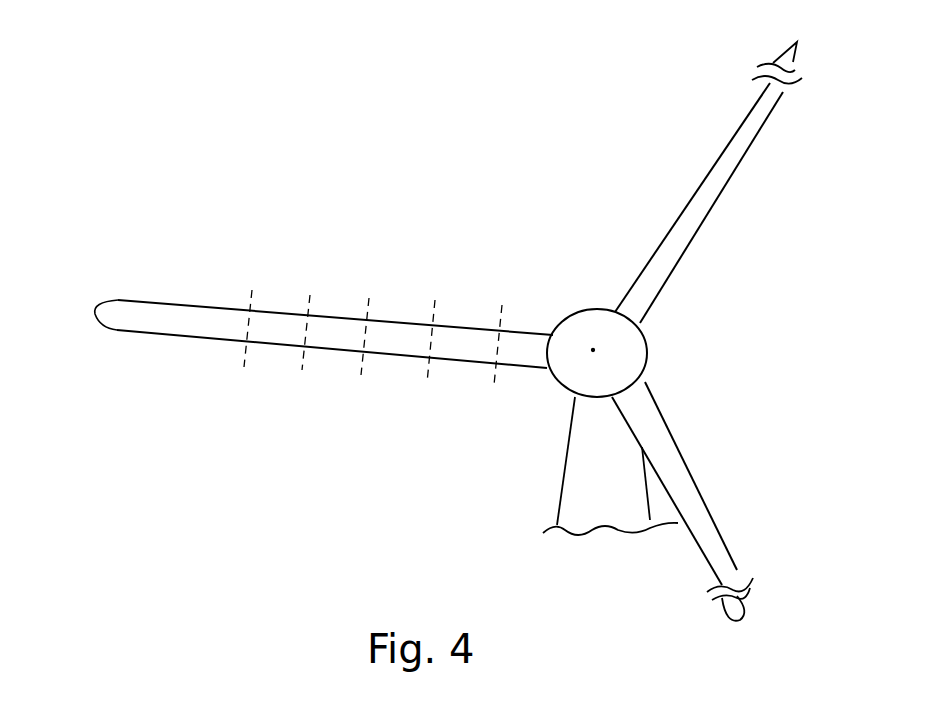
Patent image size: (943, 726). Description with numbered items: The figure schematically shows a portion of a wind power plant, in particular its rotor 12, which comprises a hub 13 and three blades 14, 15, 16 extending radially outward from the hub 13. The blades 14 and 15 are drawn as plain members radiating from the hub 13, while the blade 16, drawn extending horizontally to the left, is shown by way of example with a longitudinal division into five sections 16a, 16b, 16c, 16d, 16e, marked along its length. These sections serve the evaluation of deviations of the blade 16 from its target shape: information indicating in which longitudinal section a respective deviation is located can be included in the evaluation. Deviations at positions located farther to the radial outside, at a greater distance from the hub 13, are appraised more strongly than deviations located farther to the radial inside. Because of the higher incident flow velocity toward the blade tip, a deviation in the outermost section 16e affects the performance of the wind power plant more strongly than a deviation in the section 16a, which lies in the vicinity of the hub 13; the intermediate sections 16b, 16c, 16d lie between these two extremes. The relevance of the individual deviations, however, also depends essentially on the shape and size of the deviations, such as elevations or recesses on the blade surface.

The rotor 12 is at (583, 228).
The hub 13 is at (648, 350).
The blade 14 is at (732, 175).
The blade 15 is at (705, 495).
The blade 16 is at (338, 368).
The section 16a is at (565, 312).
The section 16b is at (497, 300).
The section 16c is at (427, 290).
The section 16d is at (365, 284).
The section 16e is at (302, 280).